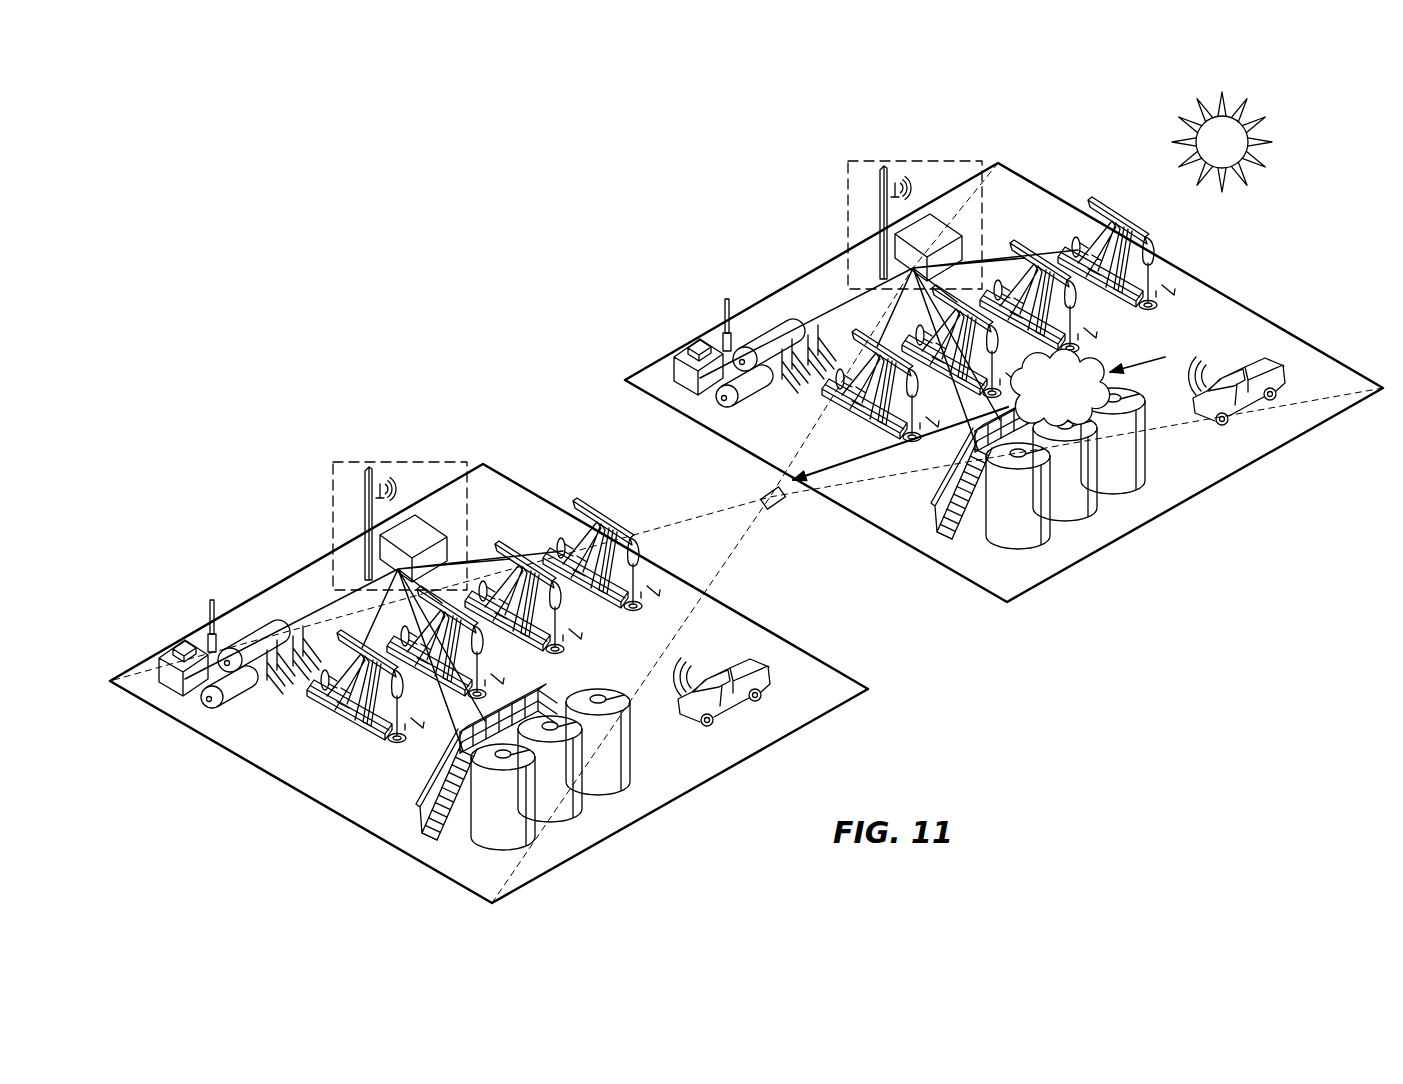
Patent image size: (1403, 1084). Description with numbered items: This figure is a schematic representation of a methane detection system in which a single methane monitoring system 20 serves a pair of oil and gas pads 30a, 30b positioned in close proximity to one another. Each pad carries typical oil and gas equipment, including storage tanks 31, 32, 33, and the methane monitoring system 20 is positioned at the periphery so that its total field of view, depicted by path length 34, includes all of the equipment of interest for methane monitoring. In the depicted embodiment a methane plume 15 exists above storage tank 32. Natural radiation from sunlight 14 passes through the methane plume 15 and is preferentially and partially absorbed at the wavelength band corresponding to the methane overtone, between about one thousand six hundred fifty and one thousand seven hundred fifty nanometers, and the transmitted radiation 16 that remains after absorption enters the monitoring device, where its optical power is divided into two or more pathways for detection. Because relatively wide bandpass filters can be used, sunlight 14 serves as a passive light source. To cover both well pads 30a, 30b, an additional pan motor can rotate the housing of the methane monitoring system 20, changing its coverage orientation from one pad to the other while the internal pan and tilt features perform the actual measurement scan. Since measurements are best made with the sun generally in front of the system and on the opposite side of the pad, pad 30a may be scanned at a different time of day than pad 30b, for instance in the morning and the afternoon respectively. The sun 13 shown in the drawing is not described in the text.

The sun 13 is at (1216, 142).
The sunlight 14 is at (1165, 357).
The methane plume 15 is at (1046, 404).
The transmitted radiation 16 is at (877, 455).
The methane monitoring system 20 is at (780, 506).
The pad 30a is at (1013, 360).
The pad 30b is at (252, 526).
The storage tank 31 is at (1022, 530).
The storage tank 32 is at (1072, 505).
The storage tank 33 is at (1124, 479).
The path length 34 is at (1003, 170).